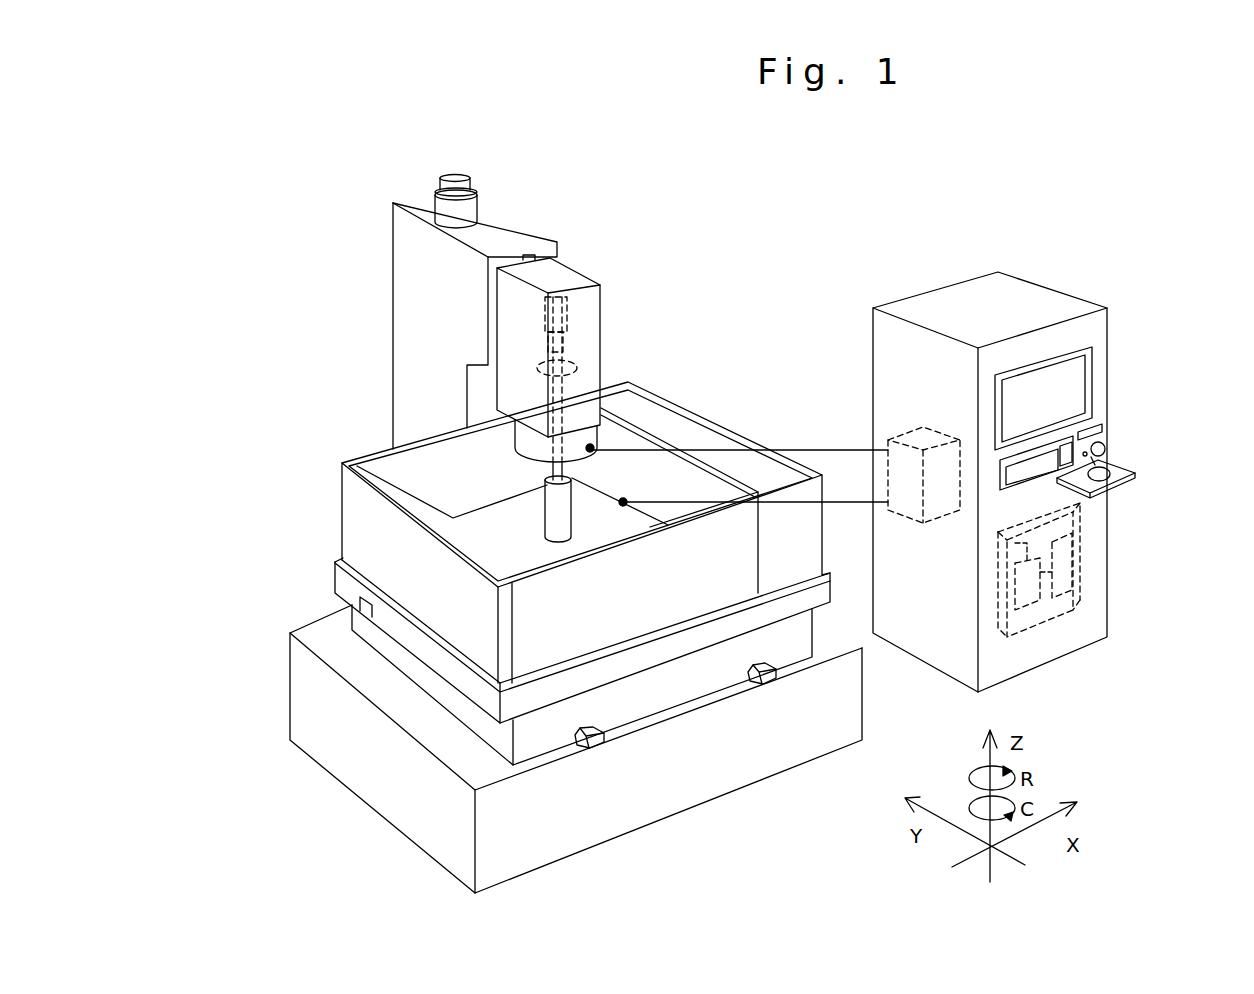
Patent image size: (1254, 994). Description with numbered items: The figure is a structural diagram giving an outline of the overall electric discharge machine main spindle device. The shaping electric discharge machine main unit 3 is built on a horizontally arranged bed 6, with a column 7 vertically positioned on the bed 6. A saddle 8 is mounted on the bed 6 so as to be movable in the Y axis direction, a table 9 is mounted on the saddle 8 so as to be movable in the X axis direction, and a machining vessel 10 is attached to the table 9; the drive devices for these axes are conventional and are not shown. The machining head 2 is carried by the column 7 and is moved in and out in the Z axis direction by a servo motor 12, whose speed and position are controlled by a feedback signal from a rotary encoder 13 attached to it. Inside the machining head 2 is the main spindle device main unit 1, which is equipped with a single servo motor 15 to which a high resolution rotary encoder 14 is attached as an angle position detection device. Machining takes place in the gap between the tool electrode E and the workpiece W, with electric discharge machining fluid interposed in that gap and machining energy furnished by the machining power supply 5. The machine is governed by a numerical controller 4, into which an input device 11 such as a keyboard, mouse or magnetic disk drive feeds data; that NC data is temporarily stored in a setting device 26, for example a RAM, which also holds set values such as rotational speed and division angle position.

The main spindle device main unit 1 is at (583, 290).
The machining head 2 is at (559, 268).
The shaping electric discharge machine main unit 3 is at (550, 188).
The numerical controller 4 is at (1068, 617).
The machining power supply 5 is at (901, 436).
The bed 6 is at (340, 767).
The column 7 is at (398, 324).
The saddle 8 is at (805, 645).
The table 9 is at (338, 578).
The machining vessel 10 is at (350, 541).
The input device 11 is at (1107, 423).
The servo motor 12 is at (437, 206).
The rotary encoder 13 is at (461, 178).
The rotary encoder 14 is at (552, 300).
The servo motor 15 is at (566, 318).
The setting device 26 is at (1070, 587).
The workpiece W is at (453, 517).
The tool electrode E is at (551, 540).